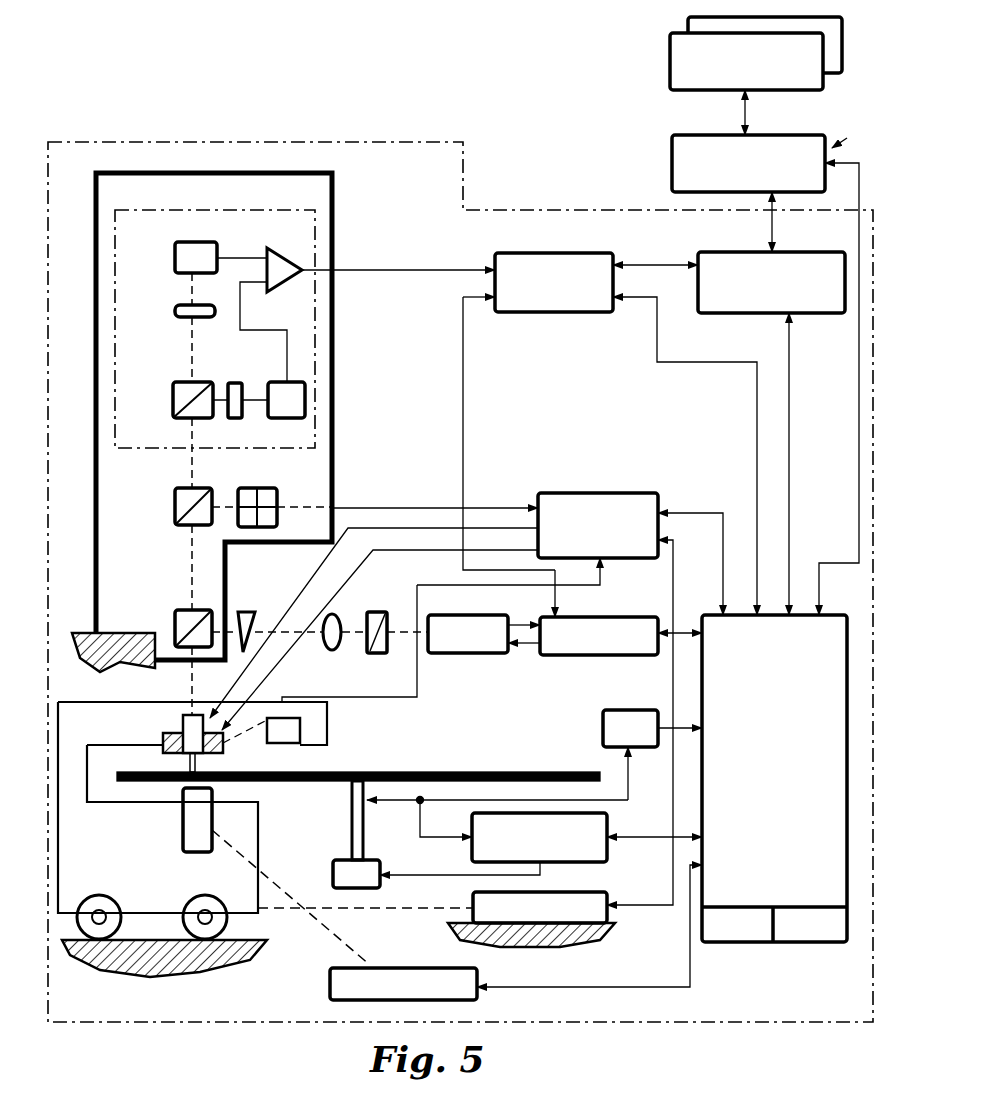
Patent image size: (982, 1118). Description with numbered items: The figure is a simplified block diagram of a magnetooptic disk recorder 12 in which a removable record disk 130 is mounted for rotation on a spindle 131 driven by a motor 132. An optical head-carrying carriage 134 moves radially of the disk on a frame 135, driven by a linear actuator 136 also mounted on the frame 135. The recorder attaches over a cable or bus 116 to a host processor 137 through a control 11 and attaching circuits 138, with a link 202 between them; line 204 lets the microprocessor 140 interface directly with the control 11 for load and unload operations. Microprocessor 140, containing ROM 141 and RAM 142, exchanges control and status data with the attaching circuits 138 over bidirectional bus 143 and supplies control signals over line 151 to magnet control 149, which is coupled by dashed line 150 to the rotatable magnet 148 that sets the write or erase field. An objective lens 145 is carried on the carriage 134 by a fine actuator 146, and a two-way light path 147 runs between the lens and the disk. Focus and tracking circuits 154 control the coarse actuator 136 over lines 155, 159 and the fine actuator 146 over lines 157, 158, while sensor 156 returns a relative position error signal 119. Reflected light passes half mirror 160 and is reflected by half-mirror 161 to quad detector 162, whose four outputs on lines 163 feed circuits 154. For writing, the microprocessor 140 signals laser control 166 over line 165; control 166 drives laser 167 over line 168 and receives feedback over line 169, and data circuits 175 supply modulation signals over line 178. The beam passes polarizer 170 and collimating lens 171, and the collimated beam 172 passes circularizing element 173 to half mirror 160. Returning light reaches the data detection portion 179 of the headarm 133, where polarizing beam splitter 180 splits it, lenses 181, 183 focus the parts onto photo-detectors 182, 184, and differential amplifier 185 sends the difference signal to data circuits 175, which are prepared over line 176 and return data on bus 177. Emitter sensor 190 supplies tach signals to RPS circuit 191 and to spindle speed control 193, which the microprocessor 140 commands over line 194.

The control 11 is at (766, 153).
The optical disk drive 12 is at (690, 1022).
The cable or bus 116 is at (772, 222).
The relative position error (RPE) signal 119 is at (368, 698).
The magnetooptic record disk 130 is at (535, 772).
The spindle 131 is at (352, 808).
The motor 132 is at (340, 860).
The headarm 133 is at (96, 352).
The carriage 134 is at (243, 923).
The frame 135 is at (105, 670).
The linear actuator 136 is at (473, 898).
The host processor 137 is at (664, 80).
The attaching circuits 138 is at (820, 252).
The microprocessor 140 is at (792, 866).
The read-only memory (ROM) 141 is at (795, 945).
The random-access memory (RAM) 142 is at (735, 945).
The bidirectional bus 143 is at (789, 518).
The objective lens 145 is at (183, 730).
The fine actuator 146 is at (163, 745).
The two-way light path 147 is at (190, 762).
The magnet 148 is at (183, 830).
The magnet control 149 is at (420, 950).
The dashed line 150 is at (292, 870).
The line 151 is at (615, 987).
The focus and tracking circuits 154 is at (625, 493).
The line 155 is at (673, 560).
The sensor 156 is at (280, 743).
The line 157 is at (293, 600).
The line 158 is at (362, 565).
The line 159 is at (705, 513).
The half mirror 160 is at (175, 625).
The half-mirror 161 is at (175, 500).
The quad detector 162 is at (290, 494).
The lines 163 is at (390, 508).
The line 165 is at (690, 628).
The laser control 166 is at (606, 610).
The laser 167 is at (440, 653).
The line 168 is at (530, 645).
The line 169 is at (533, 598).
The polarizer 170 is at (375, 655).
The collimating lens 171 is at (332, 650).
The collimated beam 172 is at (307, 633).
The circularizing optical element 173 is at (268, 600).
The data circuits 175 is at (603, 243).
The line 176 is at (718, 368).
The bus 177 is at (668, 243).
The line 178 is at (463, 350).
The data detection portion 179 is at (157, 239).
The polarizing beam splitter 180 is at (173, 400).
The lens 181 is at (232, 383).
The photo-detector 182 is at (275, 382).
The lens 183 is at (175, 310).
The photo-detector 184 is at (175, 258).
The differential amplifier 185 is at (288, 252).
The emitter sensor 190 is at (388, 802).
The RPS circuit 191 is at (638, 687).
The spindle speed control circuits 193 is at (470, 850).
The line 194 is at (658, 830).
The host interface line 202 is at (750, 118).
The line 204 is at (822, 570).